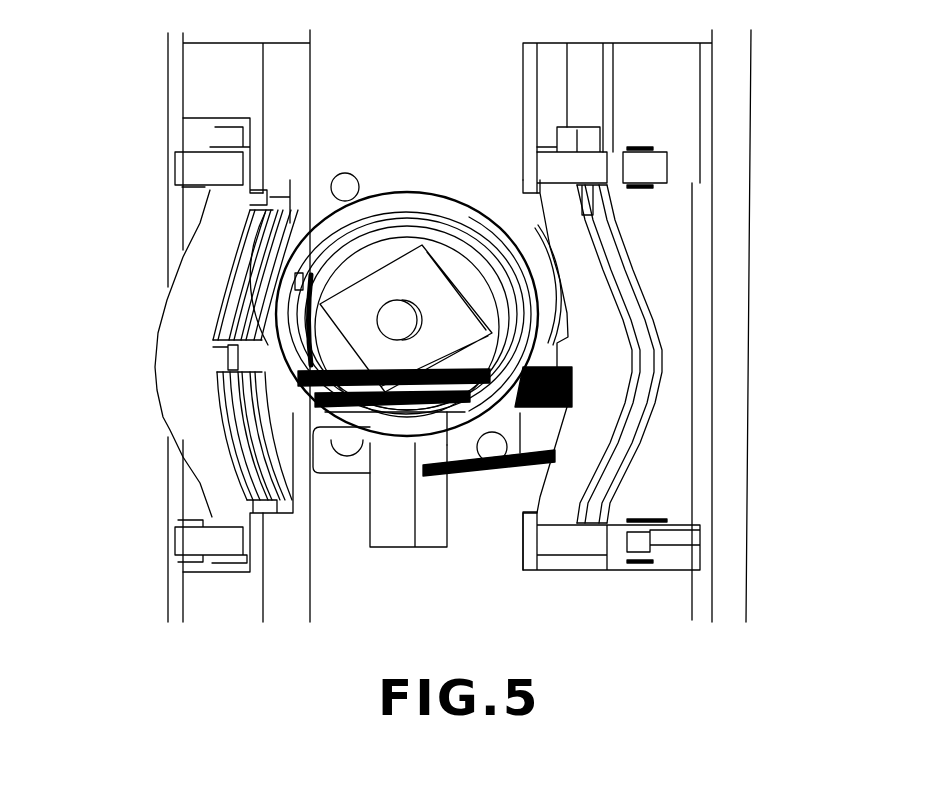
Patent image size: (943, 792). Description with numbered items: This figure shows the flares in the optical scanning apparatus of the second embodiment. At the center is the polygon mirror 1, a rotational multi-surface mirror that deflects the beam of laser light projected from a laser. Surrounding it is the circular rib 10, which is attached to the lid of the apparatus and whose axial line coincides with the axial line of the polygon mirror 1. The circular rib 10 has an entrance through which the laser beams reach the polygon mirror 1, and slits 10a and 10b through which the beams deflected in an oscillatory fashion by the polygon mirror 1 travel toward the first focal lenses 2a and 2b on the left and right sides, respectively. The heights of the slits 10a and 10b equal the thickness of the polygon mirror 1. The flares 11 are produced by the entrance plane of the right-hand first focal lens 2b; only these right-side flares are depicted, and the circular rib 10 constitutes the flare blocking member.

The polygon mirror 1 is at (410, 270).
The circular rib 10 is at (396, 203).
The slit 10a is at (321, 262).
The slit 10b is at (533, 267).
The first focal lens 2a is at (213, 243).
The first focal lens 2b is at (607, 313).
The flares 11 is at (573, 377).